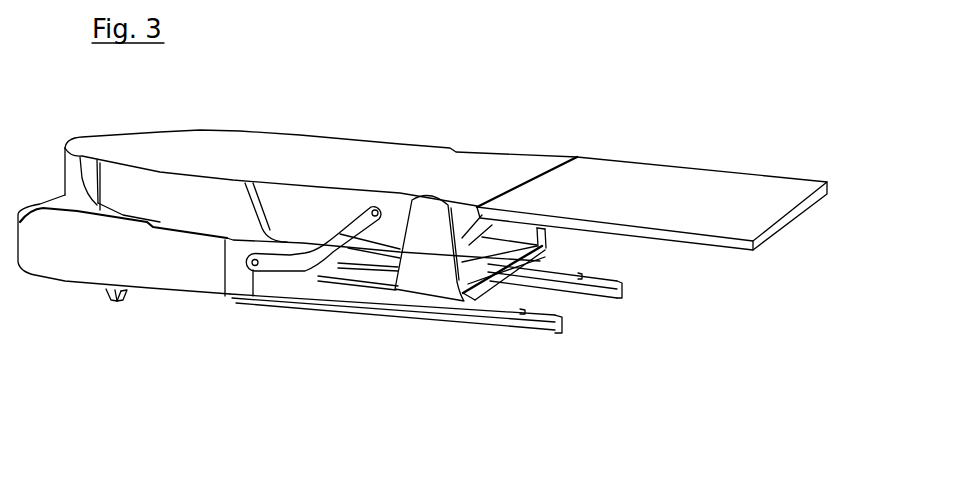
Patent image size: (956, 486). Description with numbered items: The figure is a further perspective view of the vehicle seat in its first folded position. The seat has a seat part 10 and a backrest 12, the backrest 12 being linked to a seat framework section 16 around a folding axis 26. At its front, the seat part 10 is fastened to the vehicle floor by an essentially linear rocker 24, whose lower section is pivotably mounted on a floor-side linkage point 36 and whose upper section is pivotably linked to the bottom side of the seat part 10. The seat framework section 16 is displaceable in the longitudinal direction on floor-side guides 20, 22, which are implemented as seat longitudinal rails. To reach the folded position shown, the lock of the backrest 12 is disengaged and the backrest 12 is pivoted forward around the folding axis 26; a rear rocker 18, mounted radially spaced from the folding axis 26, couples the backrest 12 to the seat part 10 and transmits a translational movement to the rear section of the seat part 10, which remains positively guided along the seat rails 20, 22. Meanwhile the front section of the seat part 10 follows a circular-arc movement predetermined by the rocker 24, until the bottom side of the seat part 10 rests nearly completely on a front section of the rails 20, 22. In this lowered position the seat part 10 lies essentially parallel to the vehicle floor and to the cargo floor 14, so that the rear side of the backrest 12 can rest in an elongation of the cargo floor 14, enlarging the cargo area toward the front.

The seat part 10 is at (158, 260).
The backrest 12 is at (332, 190).
The cargo floor 14 is at (695, 205).
The seat framework section 16 is at (450, 273).
The rear rocker 18 is at (288, 271).
The floor-side guide 20 is at (388, 307).
The floor-side guide 22 is at (580, 288).
The rocker 24 is at (107, 290).
The folding axis 26 is at (429, 220).
The floor-side linkage point 36 is at (125, 292).